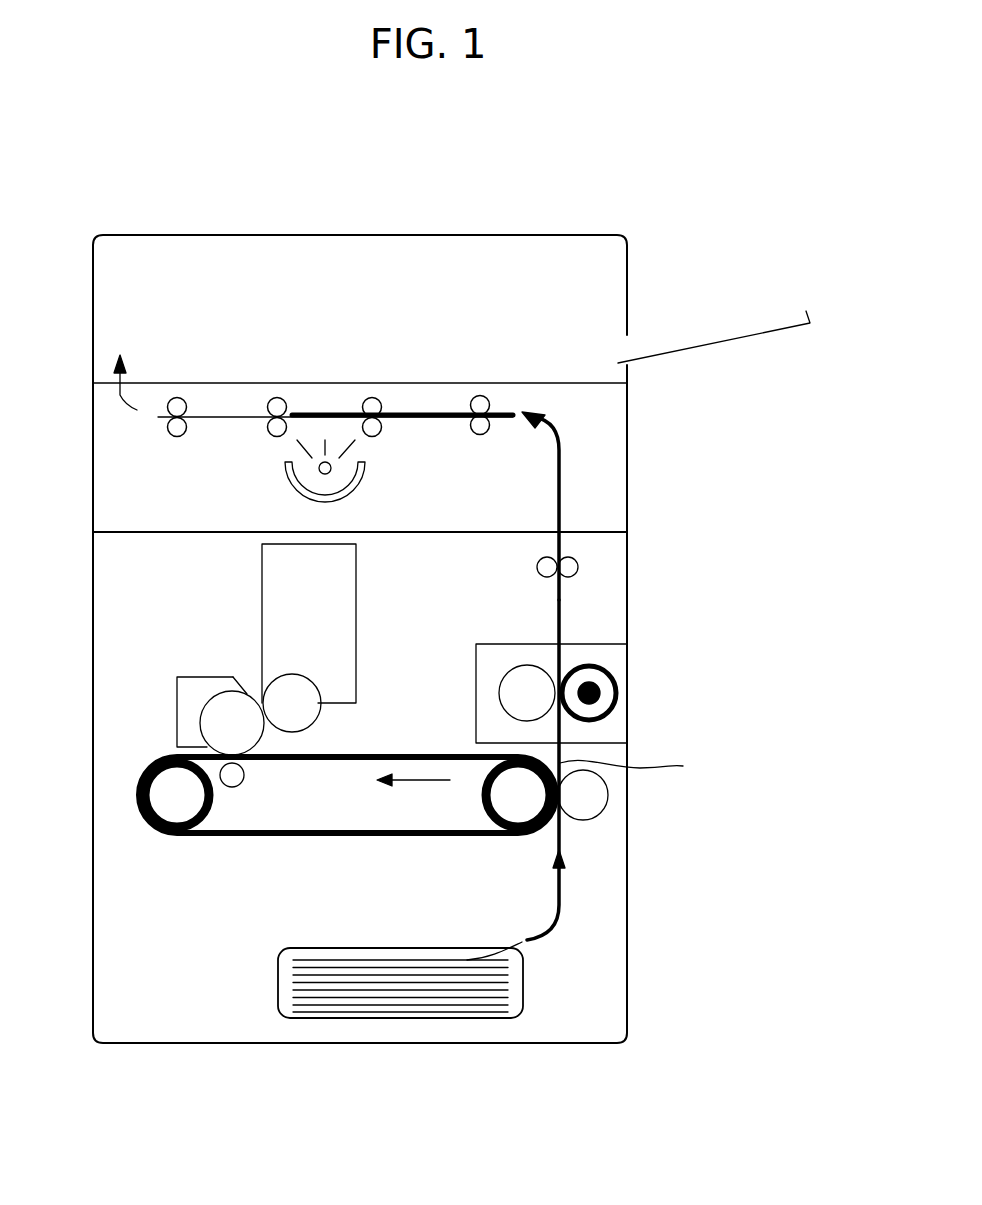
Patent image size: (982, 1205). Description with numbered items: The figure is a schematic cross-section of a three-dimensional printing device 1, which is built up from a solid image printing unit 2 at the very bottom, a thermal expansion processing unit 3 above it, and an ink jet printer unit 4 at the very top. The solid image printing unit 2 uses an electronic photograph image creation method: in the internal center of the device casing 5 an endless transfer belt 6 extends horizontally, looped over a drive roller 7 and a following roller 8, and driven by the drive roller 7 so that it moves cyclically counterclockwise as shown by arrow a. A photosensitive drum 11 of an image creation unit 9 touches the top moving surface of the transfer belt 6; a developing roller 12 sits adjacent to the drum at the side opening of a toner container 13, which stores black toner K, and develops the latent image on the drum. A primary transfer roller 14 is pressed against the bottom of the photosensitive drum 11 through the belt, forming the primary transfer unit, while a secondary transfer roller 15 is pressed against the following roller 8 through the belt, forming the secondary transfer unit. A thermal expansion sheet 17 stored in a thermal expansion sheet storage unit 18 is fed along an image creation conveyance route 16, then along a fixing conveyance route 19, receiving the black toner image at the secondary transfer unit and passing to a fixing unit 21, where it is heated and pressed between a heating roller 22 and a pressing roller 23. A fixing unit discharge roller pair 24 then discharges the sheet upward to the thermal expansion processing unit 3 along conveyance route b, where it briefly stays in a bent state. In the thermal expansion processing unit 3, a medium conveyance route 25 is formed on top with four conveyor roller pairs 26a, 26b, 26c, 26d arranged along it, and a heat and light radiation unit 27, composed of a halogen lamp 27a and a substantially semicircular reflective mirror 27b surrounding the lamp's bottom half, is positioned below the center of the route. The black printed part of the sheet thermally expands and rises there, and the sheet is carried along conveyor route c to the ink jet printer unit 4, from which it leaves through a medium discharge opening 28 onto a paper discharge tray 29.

The three-dimensional printing device 1 is at (681, 314).
The solid image printing unit 2 is at (631, 887).
The thermal expansion processing unit 3 is at (629, 448).
The ink jet printer unit 4 is at (630, 268).
The device casing 5 is at (627, 588).
The transfer belt 6 is at (310, 832).
The drive roller 7 is at (210, 820).
The following roller 8 is at (492, 818).
The image creation unit 9 is at (244, 638).
The photosensitive drum 11 is at (259, 746).
The developing roller 12 is at (332, 714).
The toner container 13 is at (356, 597).
The primary transfer roller 14 is at (243, 783).
The secondary transfer roller 15 is at (609, 797).
The image creation conveyance route 16 is at (561, 900).
The thermal expansion sheet 17 is at (430, 412).
The thermal expansion sheet storage unit 18 is at (523, 978).
The fixing conveyance route 19 is at (641, 763).
The fixing unit 21 is at (627, 683).
The heating roller 22 is at (590, 665).
The pressing roller 23 is at (516, 644).
The fixing unit discharge roller pair 24 is at (552, 578).
The medium conveyance route 25 is at (228, 424).
The conveyor roller pair 26a is at (490, 426).
The conveyor roller pair 26b is at (382, 428).
The conveyor roller pair 26c is at (287, 428).
The conveyor roller pair 26d is at (187, 428).
The heat and light radiation unit 27 is at (257, 484).
The halogen lamp 27a is at (289, 470).
The reflective mirror 27b is at (290, 484).
The medium discharge opening 28 is at (619, 350).
The paper discharge tray 29 is at (760, 330).
The arrow a is at (428, 782).
The conveyance route b is at (562, 460).
The conveyor route c is at (124, 410).